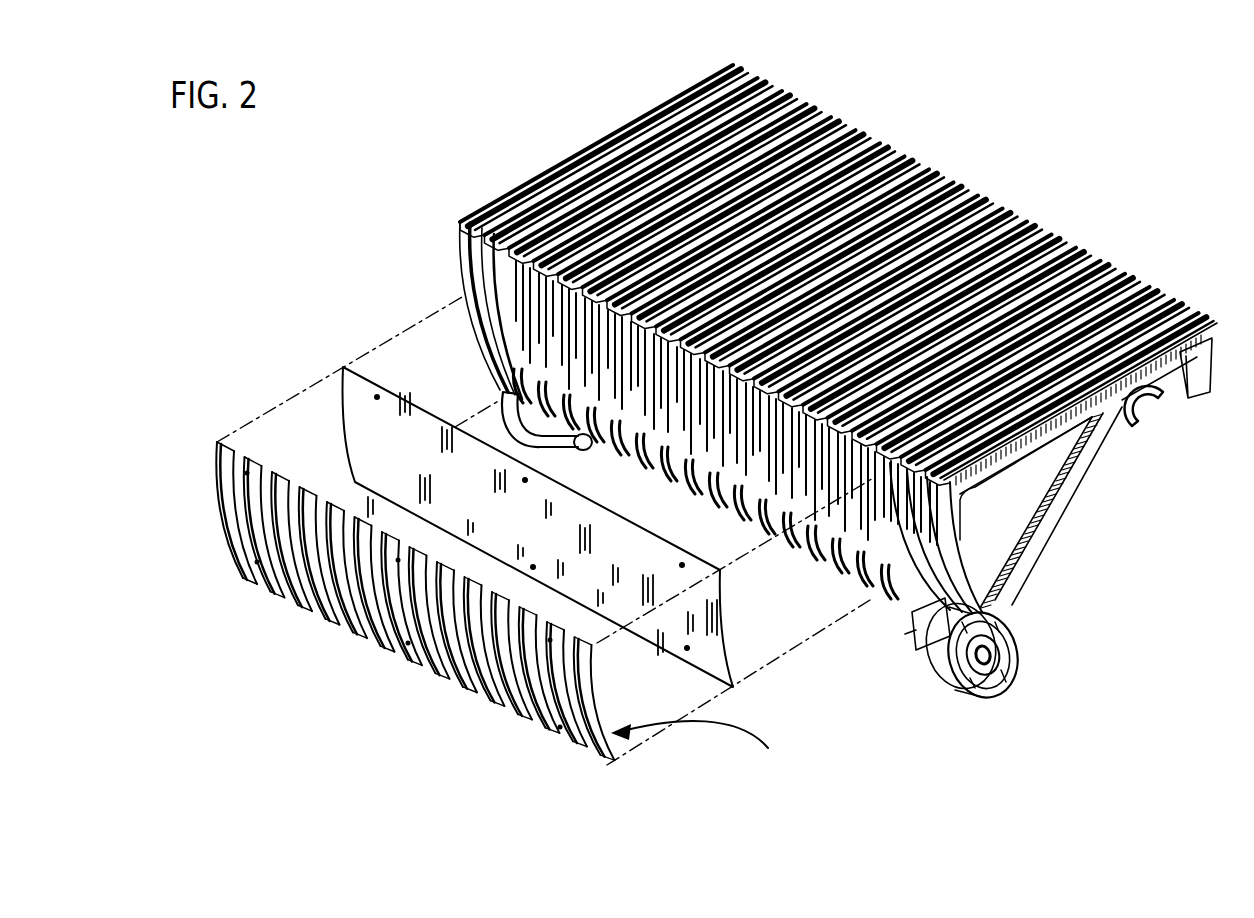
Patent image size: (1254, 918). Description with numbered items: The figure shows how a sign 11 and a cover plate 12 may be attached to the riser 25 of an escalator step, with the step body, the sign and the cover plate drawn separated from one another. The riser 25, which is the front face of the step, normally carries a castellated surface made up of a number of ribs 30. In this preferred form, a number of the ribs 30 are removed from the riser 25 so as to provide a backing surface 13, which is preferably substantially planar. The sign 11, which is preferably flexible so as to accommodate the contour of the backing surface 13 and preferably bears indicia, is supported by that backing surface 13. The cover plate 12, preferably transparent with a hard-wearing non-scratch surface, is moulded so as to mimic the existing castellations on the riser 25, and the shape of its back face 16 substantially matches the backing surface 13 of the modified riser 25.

The sign 11 is at (357, 393).
The cover plate 12 is at (225, 492).
The backing surface 13 is at (813, 490).
The back face 16 is at (768, 748).
The riser 25 is at (478, 262).
The ribs 30 is at (462, 300).